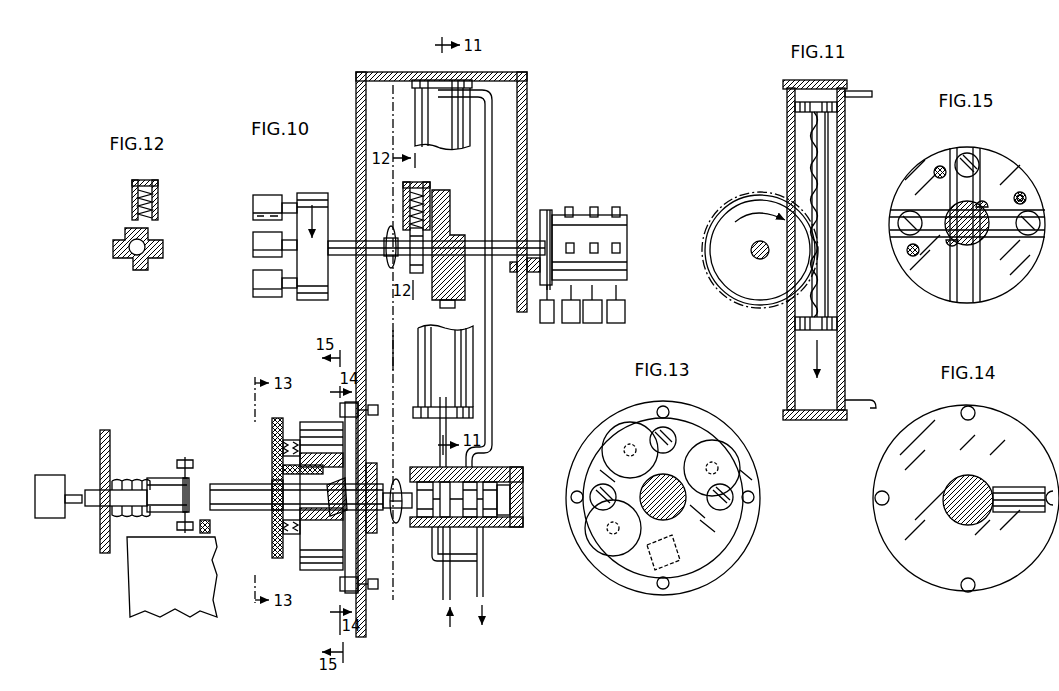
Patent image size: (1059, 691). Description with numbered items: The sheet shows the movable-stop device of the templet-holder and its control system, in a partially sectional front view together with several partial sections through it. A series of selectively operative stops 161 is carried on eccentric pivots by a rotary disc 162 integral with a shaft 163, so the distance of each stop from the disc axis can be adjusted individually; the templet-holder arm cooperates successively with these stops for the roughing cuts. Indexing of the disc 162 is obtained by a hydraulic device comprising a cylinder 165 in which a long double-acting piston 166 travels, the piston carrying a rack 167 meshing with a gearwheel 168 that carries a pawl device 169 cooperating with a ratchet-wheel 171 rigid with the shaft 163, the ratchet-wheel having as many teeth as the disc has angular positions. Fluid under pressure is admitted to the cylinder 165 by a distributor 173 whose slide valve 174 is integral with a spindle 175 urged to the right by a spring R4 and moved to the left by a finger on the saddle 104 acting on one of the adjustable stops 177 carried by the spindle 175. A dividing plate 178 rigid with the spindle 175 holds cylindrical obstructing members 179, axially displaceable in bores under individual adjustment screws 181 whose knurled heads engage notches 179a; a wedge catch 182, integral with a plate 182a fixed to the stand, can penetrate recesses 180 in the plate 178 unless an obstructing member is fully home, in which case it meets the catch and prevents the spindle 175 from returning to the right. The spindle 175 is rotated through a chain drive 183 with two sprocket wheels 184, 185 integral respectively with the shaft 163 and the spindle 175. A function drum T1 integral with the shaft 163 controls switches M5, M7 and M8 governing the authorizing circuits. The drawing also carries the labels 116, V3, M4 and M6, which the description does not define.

In FIG. 10, the saddle 104 is at (131, 601).
In FIG. 10, the coupling stubs 116 is at (292, 202).
In FIG. 10, the selectively operative stops 161 is at (266, 194).
In FIG. 10, the rotary disc 162 is at (313, 292).
In FIG. 10, the shaft 163 is at (345, 242).
In FIG. 12, the shaft 163 is at (132, 262).
In FIG. 10, the cylinder 165 is at (453, 363).
In FIG. 11, the cylinder 165 is at (787, 370).
In FIG. 11, the double-acting piston 166 is at (825, 283).
In FIG. 11, the rack 167 is at (815, 147).
In FIG. 10, the gearwheel 168 is at (450, 210).
In FIG. 11, the gearwheel 168 is at (745, 197).
In FIG. 10, the pawl device 169 is at (423, 185).
In FIG. 12, the pawl device 169 is at (132, 197).
In FIG. 10, the ratchet-wheel 171 is at (421, 262).
In FIG. 12, the ratchet-wheel 171 is at (148, 266).
In FIG. 10, the distributor 173 is at (520, 515).
In FIG. 10, the slide valve 174 is at (427, 500).
In FIG. 10, the spindle 175 is at (232, 488).
In FIG. 13, the spindle 175 is at (671, 514).
In FIG. 15, the spindle 175 is at (985, 238).
In FIG. 14, the spindle 175 is at (960, 518).
In FIG. 10, the adjustable stops 177 is at (142, 533).
In FIG. 10, the dividing plate 178 is at (318, 430).
In FIG. 13, the dividing plate 178 is at (703, 557).
In FIG. 15, the dividing plate 178 is at (1030, 257).
In FIG. 10, the obstructing members 179 is at (272, 510).
In FIG. 13, the obstructing members 179 is at (743, 510).
In FIG. 15, the obstructing members 179 is at (967, 155).
In FIG. 10, the notches 179a is at (272, 480).
In FIG. 15, the notches 179a is at (975, 165).
In FIG. 10, the recesses 180 is at (330, 488).
In FIG. 15, the recesses 180 is at (965, 296).
In FIG. 10, the adjustment screws 181 is at (272, 450).
In FIG. 13, the adjustment screws 181 is at (588, 537).
In FIG. 15, the adjustment screws 181 is at (1020, 196).
In FIG. 10, the wedge catch 182 is at (350, 482).
In FIG. 14, the wedge catch 182 is at (1022, 490).
In FIG. 10, the plate 182a is at (345, 592).
In FIG. 13, the plate 182a is at (715, 568).
In FIG. 14, the plate 182a is at (1007, 580).
In FIG. 10, the chain drive 183 is at (393, 360).
In FIG. 10, the sprocket wheel 184 is at (392, 232).
In FIG. 10, the sprocket wheel 185 is at (398, 478).
In FIG. 10, the function drum T1 is at (623, 228).
In FIG. 10, the valve V3 is at (497, 468).
In FIG. 10, the spring R4 is at (123, 480).
In FIG. 10, the motor M4 is at (58, 496).
In FIG. 10, the switch M5 is at (547, 304).
In FIG. 10, the motor M6 is at (571, 304).
In FIG. 10, the switch M7 is at (592, 304).
In FIG. 10, the switch M8 is at (616, 304).